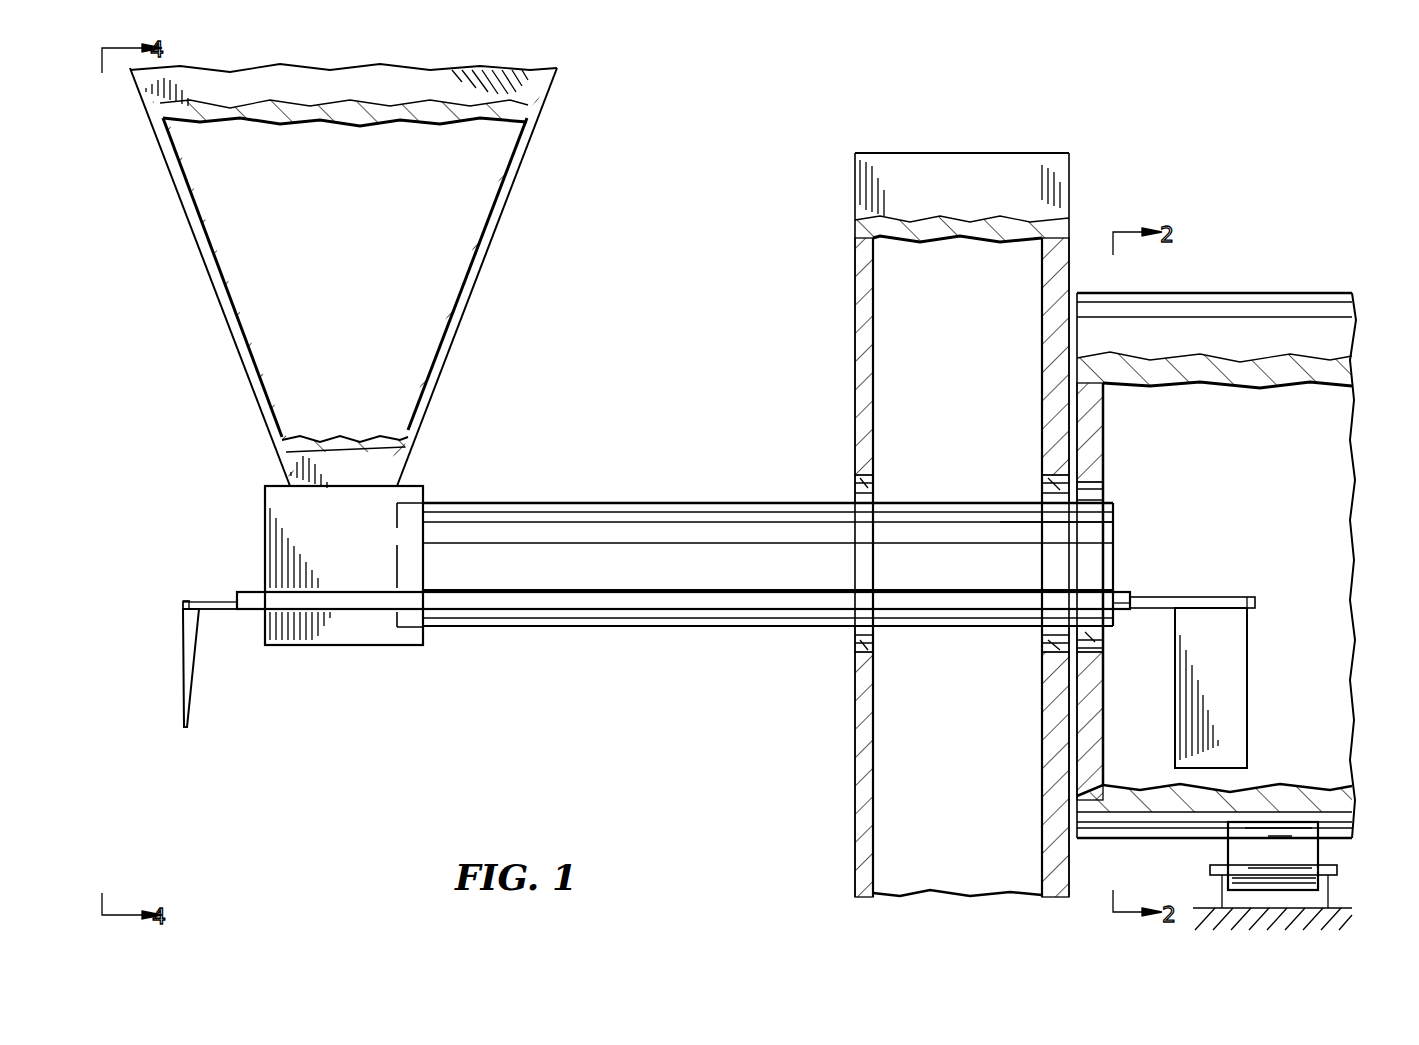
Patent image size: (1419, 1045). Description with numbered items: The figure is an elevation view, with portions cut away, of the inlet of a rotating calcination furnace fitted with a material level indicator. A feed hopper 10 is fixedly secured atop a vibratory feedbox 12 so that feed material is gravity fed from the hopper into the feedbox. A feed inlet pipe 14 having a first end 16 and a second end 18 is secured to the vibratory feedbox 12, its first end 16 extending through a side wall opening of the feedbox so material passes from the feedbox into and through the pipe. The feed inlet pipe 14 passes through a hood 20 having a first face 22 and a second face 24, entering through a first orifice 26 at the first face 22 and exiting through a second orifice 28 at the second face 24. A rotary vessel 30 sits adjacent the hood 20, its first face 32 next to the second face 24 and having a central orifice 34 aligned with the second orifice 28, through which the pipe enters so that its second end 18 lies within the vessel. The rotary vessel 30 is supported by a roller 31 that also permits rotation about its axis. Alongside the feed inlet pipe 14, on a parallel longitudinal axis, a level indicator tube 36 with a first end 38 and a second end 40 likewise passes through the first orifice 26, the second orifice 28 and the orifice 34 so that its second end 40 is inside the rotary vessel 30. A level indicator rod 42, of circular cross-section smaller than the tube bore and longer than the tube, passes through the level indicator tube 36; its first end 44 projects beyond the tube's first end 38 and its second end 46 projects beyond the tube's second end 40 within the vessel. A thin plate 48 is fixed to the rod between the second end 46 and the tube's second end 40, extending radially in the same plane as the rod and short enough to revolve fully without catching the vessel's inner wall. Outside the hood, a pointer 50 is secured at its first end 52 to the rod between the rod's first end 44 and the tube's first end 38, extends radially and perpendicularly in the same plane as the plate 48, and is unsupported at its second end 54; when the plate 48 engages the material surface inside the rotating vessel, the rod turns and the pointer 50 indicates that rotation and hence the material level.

The feed hopper 10 is at (205, 266).
The vibratory feedbox 12 is at (265, 522).
The feed inlet pipe 14 is at (603, 523).
The first end 16 is at (405, 512).
The second end 18 is at (1113, 522).
The hood 20 is at (922, 158).
The first face 22 is at (855, 313).
The second face 24 is at (1069, 202).
The first orifice 26 is at (855, 494).
The second orifice 28 is at (1042, 494).
The rotary vessel 30 is at (1222, 293).
The roller 31 is at (1307, 857).
The first face 32 is at (1103, 424).
The orifice 34 is at (1103, 498).
The level indicator tube 36 is at (606, 609).
The first end 38 is at (237, 592).
The second end 40 is at (1135, 594).
The level indicator rod 42 is at (218, 612).
The first end 44 is at (183, 605).
The second end 46 is at (1255, 601).
The thin plate 48 is at (1247, 674).
The pointer 50 is at (183, 658).
The first end 52 is at (188, 600).
The second end 54 is at (185, 727).